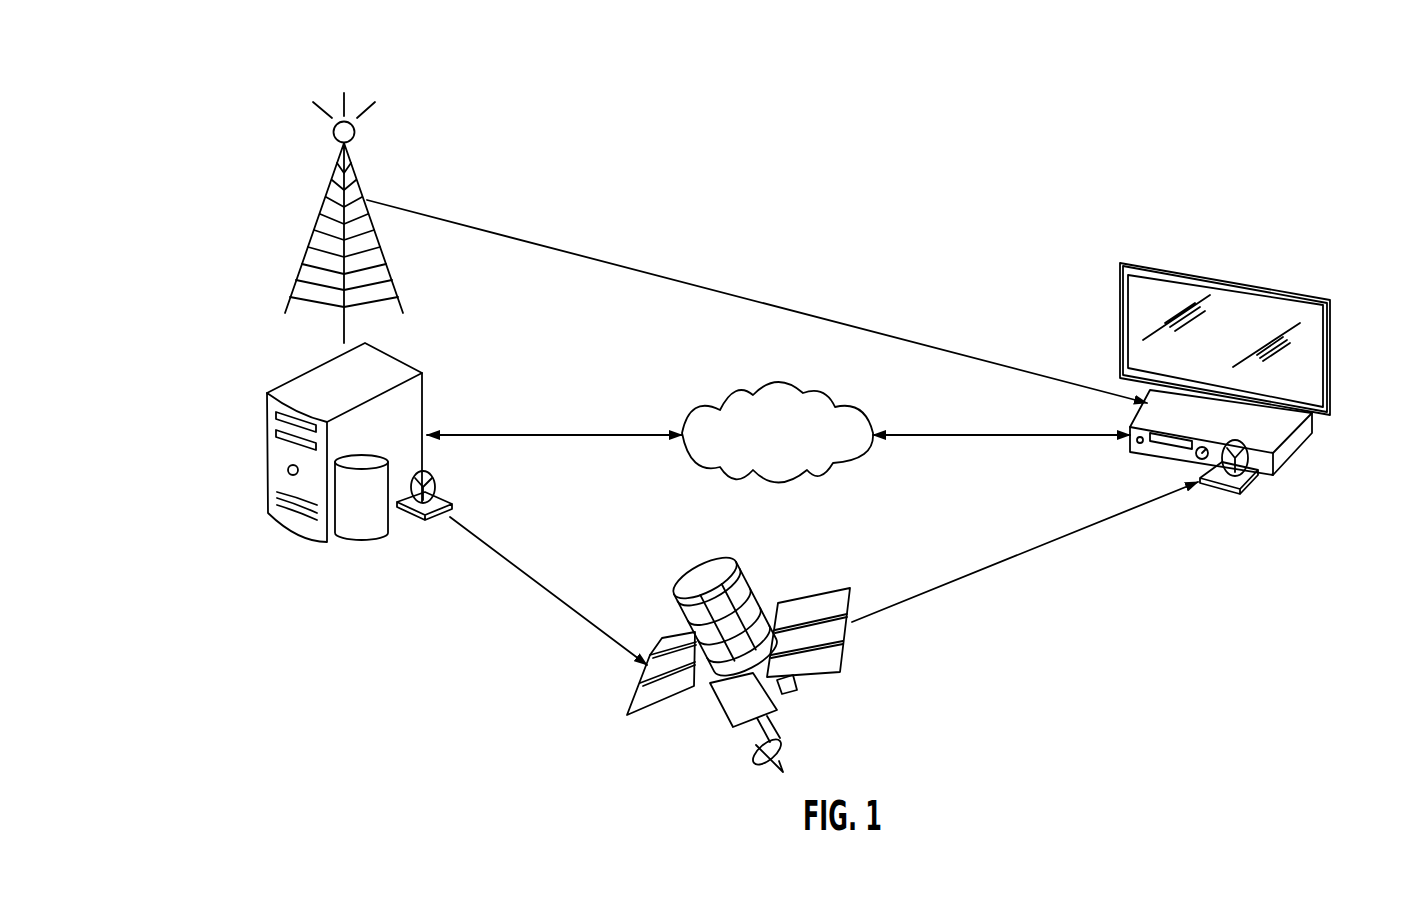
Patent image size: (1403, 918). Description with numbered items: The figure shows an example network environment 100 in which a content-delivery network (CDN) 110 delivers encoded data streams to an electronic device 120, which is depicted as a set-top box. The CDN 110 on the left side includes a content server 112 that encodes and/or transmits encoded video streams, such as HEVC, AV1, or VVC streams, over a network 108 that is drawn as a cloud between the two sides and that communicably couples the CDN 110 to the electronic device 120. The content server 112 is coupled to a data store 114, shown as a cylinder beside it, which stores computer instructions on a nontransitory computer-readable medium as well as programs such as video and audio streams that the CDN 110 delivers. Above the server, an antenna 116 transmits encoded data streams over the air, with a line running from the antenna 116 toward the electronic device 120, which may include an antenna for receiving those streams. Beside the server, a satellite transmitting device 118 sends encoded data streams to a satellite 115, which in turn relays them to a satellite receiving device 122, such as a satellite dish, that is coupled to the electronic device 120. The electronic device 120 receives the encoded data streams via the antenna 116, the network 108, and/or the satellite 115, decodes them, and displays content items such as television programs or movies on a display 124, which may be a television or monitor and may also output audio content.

The network environment 100 is at (1243, 142).
The network 108 is at (815, 474).
The content-delivery network (CDN) 110 is at (203, 583).
The content server 112 is at (267, 438).
The data store 114 is at (360, 544).
The satellite 115 is at (790, 698).
The antenna 116 is at (310, 237).
The satellite transmitting device 118 is at (440, 485).
The electronic device 120 is at (1293, 438).
The satellite receiving device 122 is at (1218, 493).
The display 124 is at (1228, 277).